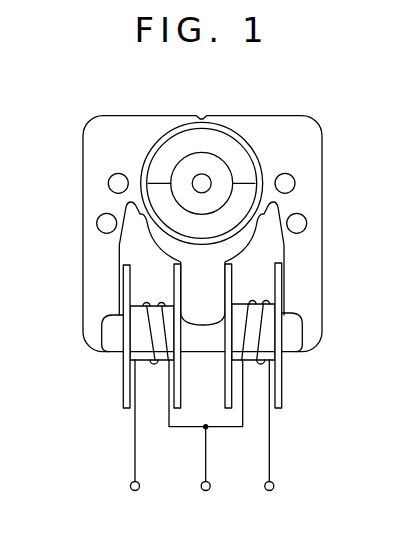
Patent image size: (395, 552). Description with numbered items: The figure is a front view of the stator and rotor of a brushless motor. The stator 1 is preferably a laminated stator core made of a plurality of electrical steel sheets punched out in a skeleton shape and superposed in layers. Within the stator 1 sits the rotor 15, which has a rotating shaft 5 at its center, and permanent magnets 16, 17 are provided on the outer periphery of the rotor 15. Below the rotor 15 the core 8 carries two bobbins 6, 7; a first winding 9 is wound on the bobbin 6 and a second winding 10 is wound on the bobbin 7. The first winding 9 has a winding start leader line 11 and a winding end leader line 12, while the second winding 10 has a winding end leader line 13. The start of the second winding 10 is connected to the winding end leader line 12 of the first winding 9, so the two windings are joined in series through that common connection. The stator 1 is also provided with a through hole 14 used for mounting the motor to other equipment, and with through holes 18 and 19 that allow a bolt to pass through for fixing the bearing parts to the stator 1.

The stator 1 is at (123, 116).
The rotating shaft 5 is at (207, 180).
The bobbin 6 is at (282, 393).
The bobbin 7 is at (123, 393).
The core 8 is at (110, 332).
The first winding 9 is at (267, 348).
The second winding 10 is at (153, 343).
The winding start leader line 11 is at (268, 462).
The winding end leader line 12 is at (203, 466).
The winding end leader line 13 is at (134, 466).
The through hole 14 is at (105, 227).
The rotor 15 is at (220, 135).
The permanent magnet 16 is at (179, 140).
The permanent magnet 17 is at (247, 190).
The through hole 18 is at (297, 180).
The through hole 19 is at (108, 183).